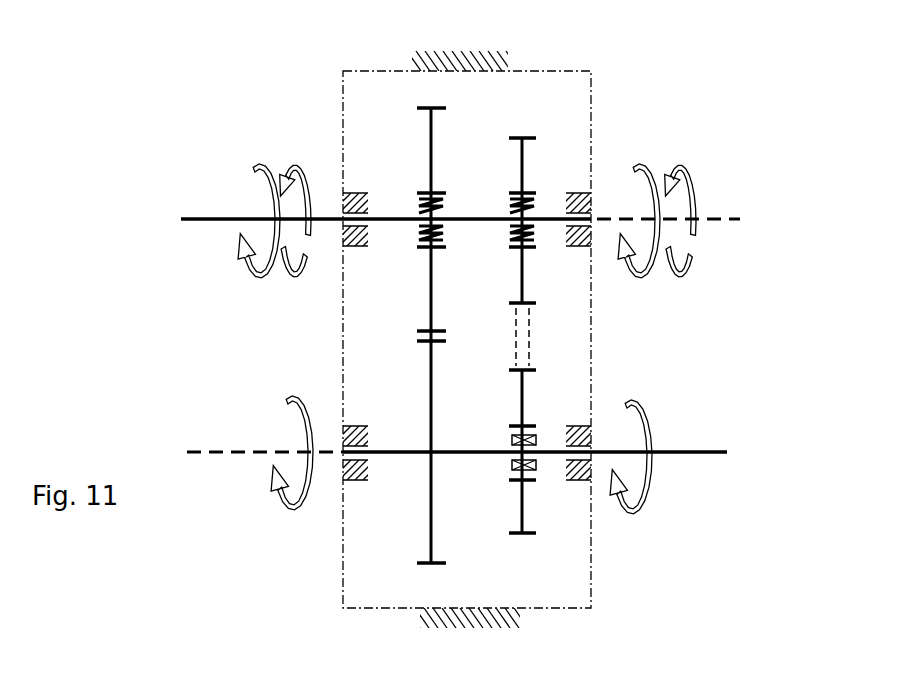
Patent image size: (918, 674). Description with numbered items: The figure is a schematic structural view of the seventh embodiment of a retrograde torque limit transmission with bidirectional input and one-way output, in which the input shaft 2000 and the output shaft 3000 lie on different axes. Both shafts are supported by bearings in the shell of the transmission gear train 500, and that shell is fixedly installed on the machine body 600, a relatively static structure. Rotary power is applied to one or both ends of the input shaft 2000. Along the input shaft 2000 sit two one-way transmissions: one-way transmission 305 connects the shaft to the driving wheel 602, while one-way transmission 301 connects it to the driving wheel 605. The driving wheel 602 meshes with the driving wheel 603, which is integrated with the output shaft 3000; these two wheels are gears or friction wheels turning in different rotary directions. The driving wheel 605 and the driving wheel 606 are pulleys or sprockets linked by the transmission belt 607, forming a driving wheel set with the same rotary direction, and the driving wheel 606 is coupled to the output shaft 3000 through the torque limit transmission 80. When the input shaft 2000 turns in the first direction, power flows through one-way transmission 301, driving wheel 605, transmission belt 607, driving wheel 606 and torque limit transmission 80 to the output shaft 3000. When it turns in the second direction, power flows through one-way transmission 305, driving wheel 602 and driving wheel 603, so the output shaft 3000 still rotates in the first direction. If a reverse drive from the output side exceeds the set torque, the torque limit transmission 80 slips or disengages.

The shell of the transmission gear train 500 is at (343, 133).
The machine body 600 is at (478, 68).
The input shaft 2000 is at (228, 218).
The output shaft 3000 is at (255, 452).
The driving wheel 602 is at (428, 132).
The driving wheel 603 is at (430, 501).
The driving wheel 605 is at (521, 136).
The driving wheel 606 is at (522, 520).
The one-way transmission 305 is at (448, 203).
The one-way transmission 301 is at (538, 203).
The transmission belt 607 is at (516, 338).
The torque limit transmission 80 is at (512, 440).